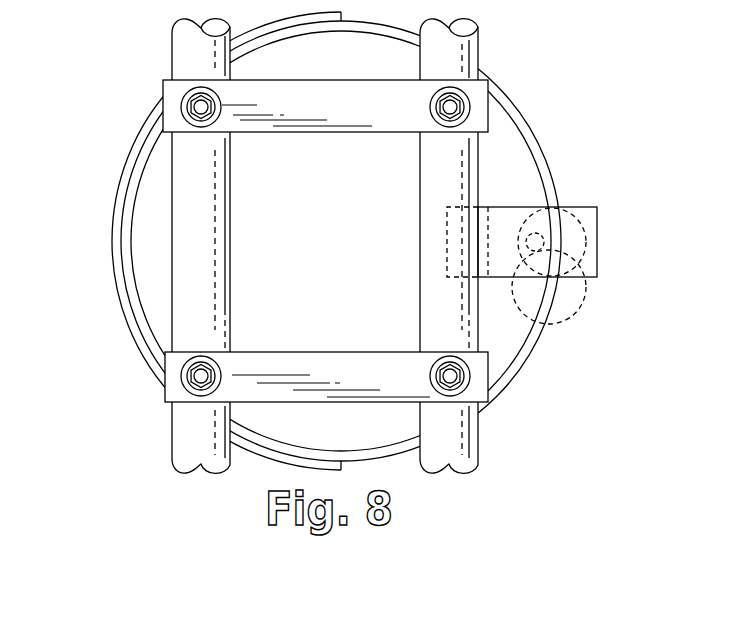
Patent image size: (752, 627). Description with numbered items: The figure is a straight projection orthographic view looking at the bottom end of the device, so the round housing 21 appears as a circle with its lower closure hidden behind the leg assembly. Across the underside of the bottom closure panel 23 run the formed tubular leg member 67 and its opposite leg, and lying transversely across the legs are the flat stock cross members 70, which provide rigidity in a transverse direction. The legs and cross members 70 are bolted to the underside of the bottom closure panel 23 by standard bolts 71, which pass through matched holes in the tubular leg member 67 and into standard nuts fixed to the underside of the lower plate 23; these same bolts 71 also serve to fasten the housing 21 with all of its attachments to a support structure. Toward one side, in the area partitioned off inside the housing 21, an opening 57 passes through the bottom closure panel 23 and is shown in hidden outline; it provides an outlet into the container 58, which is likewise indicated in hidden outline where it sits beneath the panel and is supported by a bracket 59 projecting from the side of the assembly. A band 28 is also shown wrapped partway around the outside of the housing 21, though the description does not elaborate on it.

The housing 21 is at (528, 127).
The bottom closure panel 23 is at (347, 254).
The band 28 is at (125, 167).
The opening 57 is at (550, 322).
The container 58 is at (587, 205).
The bracket 59 is at (600, 242).
The tubular leg member 67 is at (206, 246).
The cross member 70 is at (394, 116).
The bolt 71 is at (448, 124).